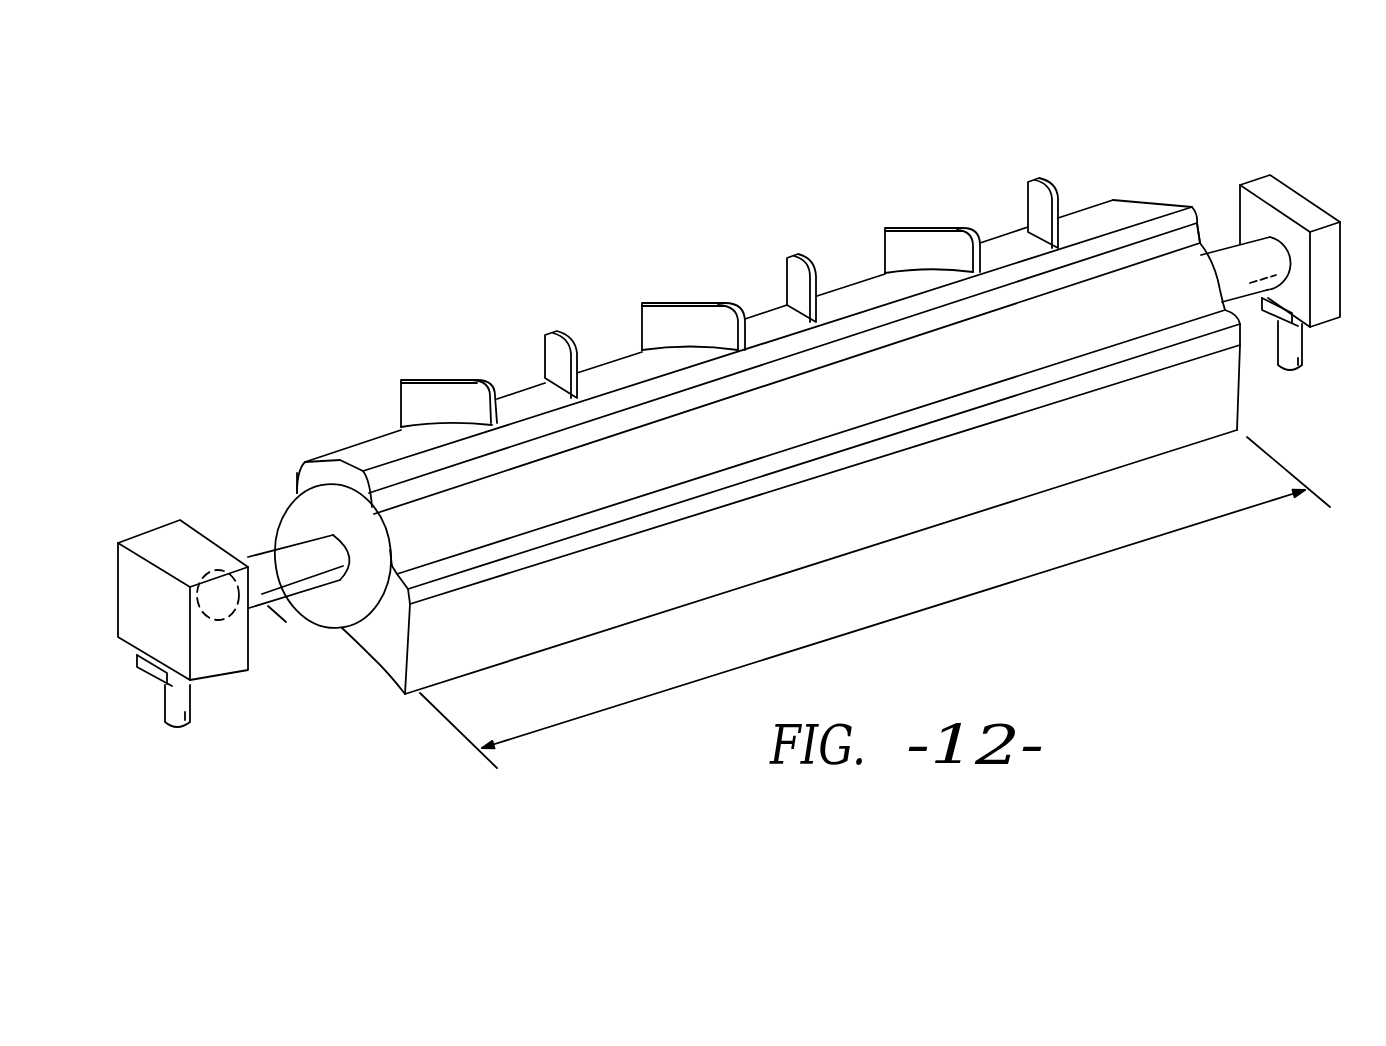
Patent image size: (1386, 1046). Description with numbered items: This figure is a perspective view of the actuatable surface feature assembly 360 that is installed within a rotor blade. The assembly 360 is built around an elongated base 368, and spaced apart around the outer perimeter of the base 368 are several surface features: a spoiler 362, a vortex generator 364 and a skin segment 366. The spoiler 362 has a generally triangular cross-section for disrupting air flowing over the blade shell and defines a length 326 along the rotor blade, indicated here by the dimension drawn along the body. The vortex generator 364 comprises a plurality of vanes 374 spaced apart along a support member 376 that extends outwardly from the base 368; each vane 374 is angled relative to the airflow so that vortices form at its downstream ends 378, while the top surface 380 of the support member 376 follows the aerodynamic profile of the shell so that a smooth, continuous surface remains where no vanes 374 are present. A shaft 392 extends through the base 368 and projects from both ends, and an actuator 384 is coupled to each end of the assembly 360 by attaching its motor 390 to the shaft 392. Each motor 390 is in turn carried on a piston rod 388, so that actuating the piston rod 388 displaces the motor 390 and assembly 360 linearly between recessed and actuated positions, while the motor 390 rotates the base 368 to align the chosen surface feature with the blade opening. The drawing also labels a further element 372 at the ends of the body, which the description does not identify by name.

The length 326 is at (1088, 562).
The actuatable surface feature assembly 360 is at (430, 243).
The spoiler 362 is at (472, 632).
The vortex generator 364 is at (613, 352).
The skin segment 366 is at (297, 635).
The base 368 is at (288, 505).
The end segment 372 is at (283, 486).
The vanes 374 is at (676, 295).
The support member 376 is at (332, 466).
The downstream ends 378 is at (497, 386).
The top surface 380 is at (385, 438).
The actuator 384 is at (140, 706).
The piston rod 388 is at (193, 707).
The motor 390 is at (178, 532).
The shaft 392 is at (265, 550).